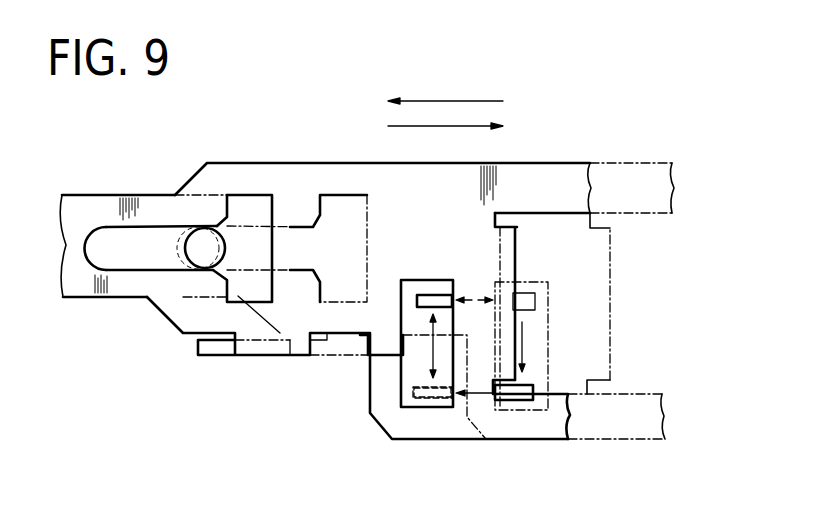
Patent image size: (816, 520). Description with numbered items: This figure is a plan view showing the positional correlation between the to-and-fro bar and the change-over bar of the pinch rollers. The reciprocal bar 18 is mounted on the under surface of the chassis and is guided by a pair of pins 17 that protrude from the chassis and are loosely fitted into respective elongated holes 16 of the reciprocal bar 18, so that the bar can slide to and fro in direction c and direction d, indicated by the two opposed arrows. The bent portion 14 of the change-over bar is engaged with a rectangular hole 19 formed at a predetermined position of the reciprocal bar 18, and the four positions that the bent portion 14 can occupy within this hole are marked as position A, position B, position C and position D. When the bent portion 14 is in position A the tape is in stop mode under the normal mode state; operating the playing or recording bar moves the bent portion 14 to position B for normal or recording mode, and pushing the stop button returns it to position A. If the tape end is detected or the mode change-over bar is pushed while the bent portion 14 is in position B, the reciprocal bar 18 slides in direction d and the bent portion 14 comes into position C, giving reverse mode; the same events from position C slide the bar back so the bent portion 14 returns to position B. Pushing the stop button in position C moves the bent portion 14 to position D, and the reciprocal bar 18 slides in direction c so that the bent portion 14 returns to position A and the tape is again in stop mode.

The bent portion 14 is at (440, 398).
The elongated hole 16 is at (105, 233).
The pin 17 is at (203, 254).
The reciprocal bar 18 is at (270, 186).
The rectangular hole 19 is at (403, 374).
The position A is at (425, 400).
The position B is at (435, 298).
The position C is at (537, 302).
The position D is at (505, 398).
The direction c is at (458, 101).
The direction d is at (427, 127).